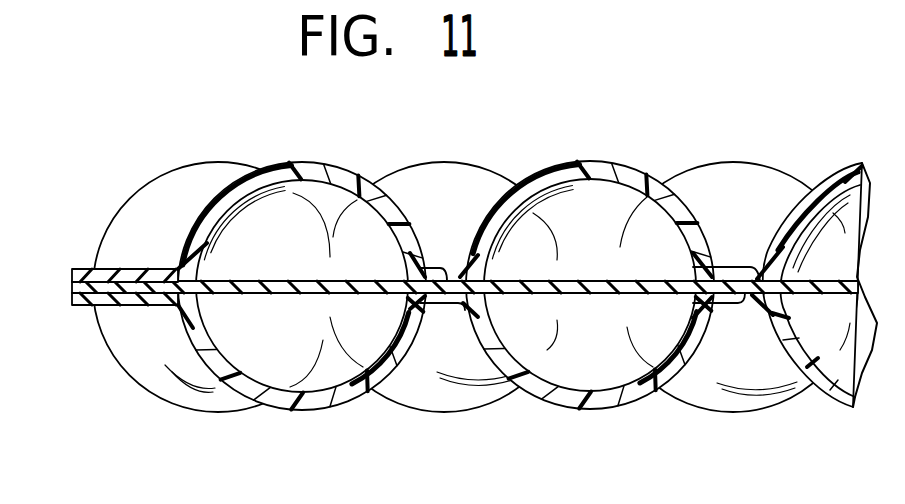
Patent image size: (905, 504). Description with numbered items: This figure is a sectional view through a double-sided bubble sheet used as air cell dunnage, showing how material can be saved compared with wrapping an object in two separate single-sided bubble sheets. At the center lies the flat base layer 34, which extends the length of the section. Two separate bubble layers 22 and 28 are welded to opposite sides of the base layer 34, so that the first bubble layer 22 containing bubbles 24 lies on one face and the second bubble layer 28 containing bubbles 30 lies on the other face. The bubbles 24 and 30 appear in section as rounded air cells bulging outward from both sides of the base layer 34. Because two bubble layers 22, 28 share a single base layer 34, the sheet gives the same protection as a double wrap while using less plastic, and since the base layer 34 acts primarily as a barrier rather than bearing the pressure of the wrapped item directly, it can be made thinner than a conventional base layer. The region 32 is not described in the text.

The bubble layer 22 is at (83, 270).
The bubbles 24 is at (272, 173).
The bubble layer 28 is at (118, 305).
The bubbles 30 is at (410, 393).
The connecting collar 32 is at (465, 307).
The base layer 34 is at (82, 305).